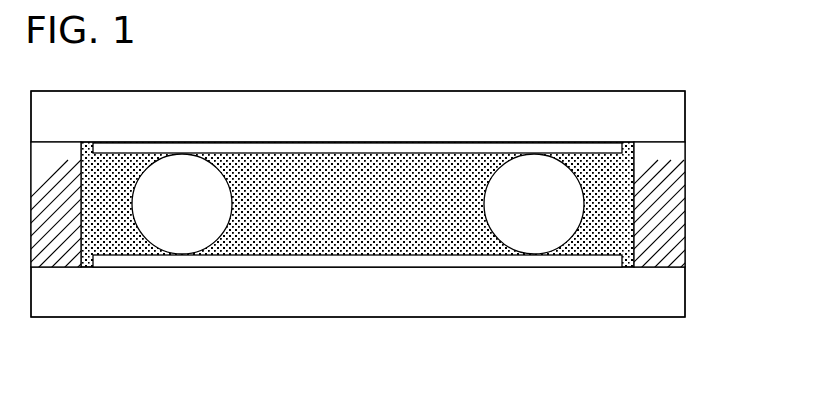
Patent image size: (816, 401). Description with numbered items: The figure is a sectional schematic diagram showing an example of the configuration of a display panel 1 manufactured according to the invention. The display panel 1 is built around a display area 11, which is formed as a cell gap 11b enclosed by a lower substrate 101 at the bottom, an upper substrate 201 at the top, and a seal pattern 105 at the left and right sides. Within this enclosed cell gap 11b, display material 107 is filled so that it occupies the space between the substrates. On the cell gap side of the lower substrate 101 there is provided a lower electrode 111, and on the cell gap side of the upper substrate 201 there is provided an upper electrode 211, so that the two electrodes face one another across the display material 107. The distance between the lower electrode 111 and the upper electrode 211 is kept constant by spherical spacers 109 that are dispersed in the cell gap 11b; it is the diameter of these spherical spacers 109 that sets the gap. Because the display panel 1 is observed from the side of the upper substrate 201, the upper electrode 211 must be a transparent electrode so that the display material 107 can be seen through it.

The display panel 1 is at (646, 84).
The display area 11 is at (329, 88).
The cell gap 11b is at (257, 192).
The lower substrate 101 is at (685, 300).
The upper substrate 201 is at (685, 114).
The seal pattern 105 is at (59, 216).
The display material 107 is at (406, 180).
The spherical spacers 109 is at (181, 216).
The lower electrode 111 is at (478, 260).
The upper electrode 211 is at (482, 147).